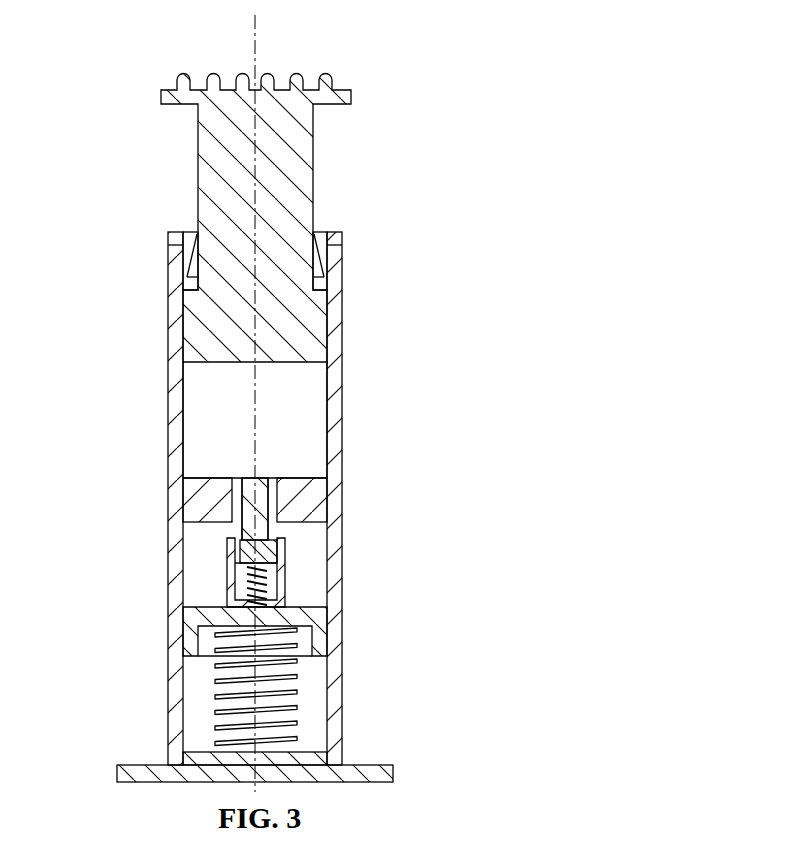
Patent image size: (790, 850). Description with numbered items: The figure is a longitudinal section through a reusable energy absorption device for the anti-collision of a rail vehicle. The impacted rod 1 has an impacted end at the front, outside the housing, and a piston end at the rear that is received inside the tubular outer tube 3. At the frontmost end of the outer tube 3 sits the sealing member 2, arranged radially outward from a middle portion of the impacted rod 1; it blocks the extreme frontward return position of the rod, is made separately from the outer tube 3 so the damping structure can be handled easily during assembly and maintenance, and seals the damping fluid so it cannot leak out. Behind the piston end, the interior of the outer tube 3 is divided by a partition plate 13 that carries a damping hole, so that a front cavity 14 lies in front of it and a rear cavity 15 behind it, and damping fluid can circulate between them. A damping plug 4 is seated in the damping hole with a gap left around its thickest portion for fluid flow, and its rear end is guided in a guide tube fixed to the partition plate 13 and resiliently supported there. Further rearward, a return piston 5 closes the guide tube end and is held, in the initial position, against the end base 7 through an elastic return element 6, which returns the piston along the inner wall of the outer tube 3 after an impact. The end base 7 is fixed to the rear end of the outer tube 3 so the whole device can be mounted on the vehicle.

The impacted rod 1 is at (298, 145).
The sealing member 2 is at (337, 233).
The outer tube 3 is at (340, 322).
The pin 4 is at (272, 532).
The support plate 5 is at (320, 608).
The spring 6 is at (297, 708).
The base plate 7 is at (380, 767).
The valve seat 13 is at (232, 502).
The chamber 14 is at (220, 437).
The cup 15 is at (210, 590).